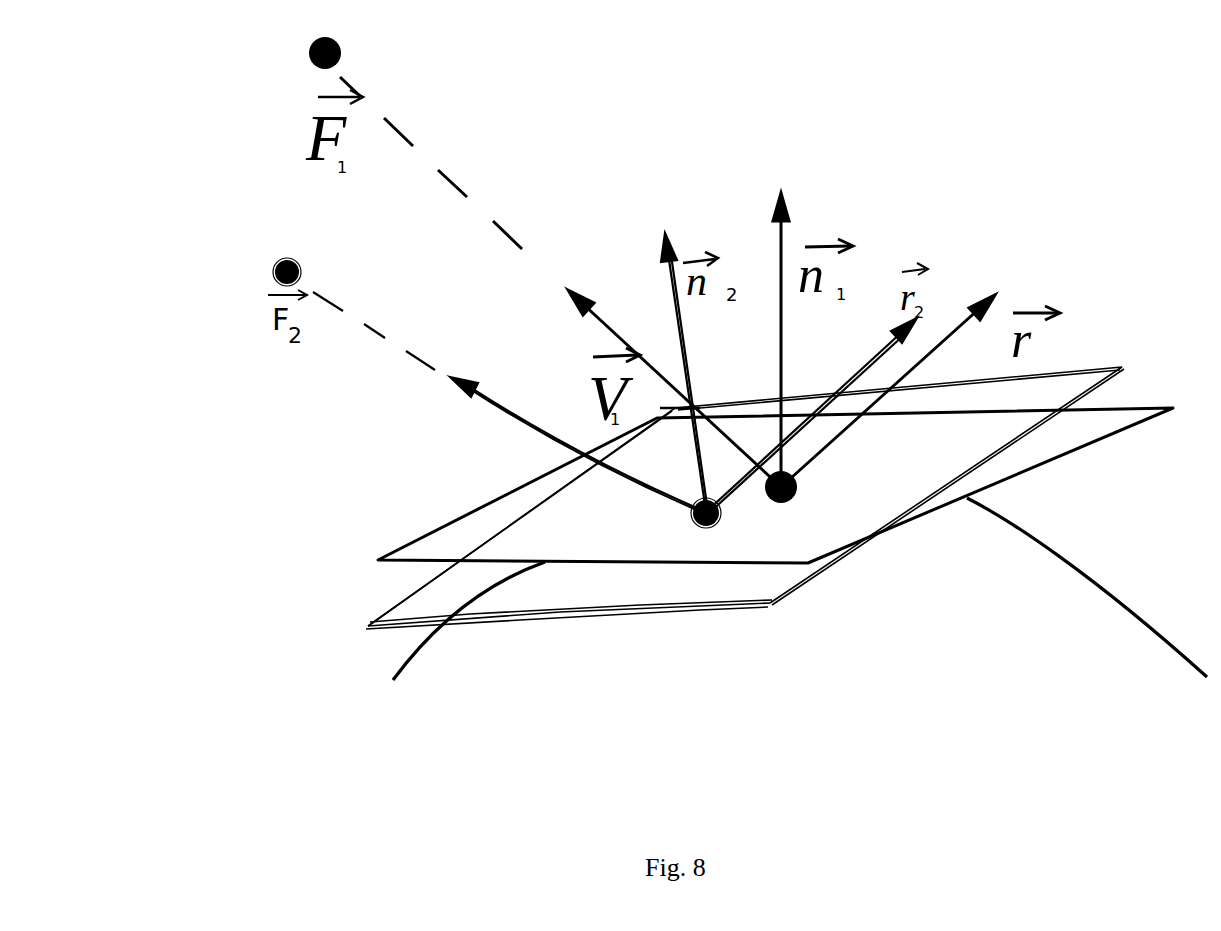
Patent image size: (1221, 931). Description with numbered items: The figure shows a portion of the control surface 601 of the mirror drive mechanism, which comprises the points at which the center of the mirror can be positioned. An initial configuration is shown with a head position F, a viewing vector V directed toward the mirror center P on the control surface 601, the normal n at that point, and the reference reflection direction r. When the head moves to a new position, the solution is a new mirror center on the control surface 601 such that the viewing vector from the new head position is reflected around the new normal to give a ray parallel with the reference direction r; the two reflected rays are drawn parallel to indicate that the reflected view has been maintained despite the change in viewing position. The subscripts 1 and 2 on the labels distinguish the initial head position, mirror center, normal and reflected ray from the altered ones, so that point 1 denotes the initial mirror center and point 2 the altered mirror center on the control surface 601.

The control surface 601 is at (800, 590).
The first point P1 on control surface 1 is at (884, 451).
The second point P2 on control surface 2 is at (735, 531).